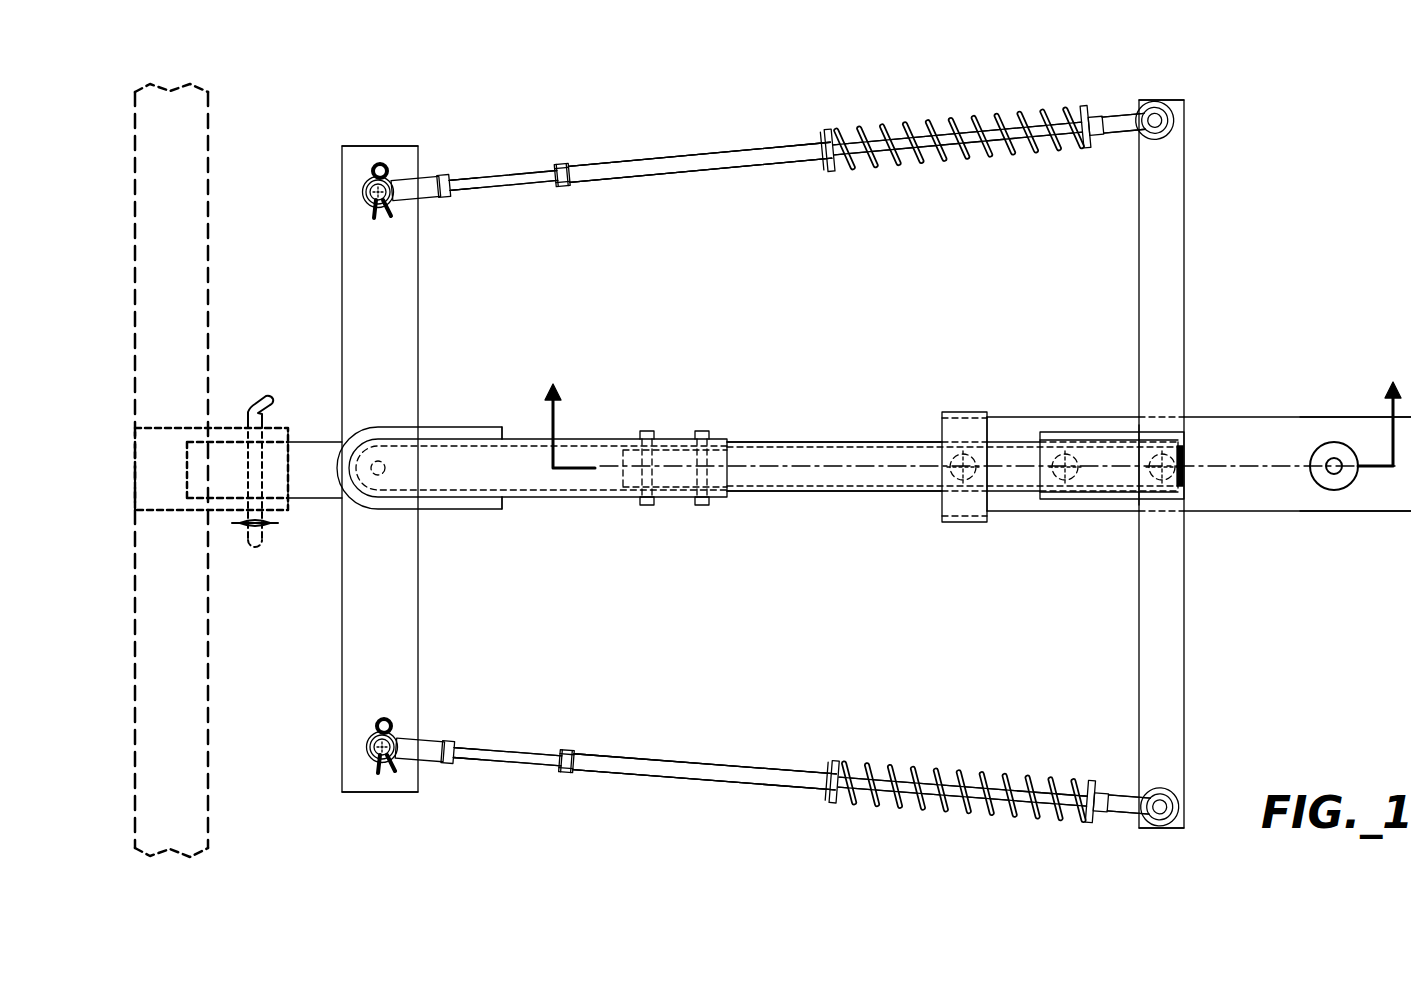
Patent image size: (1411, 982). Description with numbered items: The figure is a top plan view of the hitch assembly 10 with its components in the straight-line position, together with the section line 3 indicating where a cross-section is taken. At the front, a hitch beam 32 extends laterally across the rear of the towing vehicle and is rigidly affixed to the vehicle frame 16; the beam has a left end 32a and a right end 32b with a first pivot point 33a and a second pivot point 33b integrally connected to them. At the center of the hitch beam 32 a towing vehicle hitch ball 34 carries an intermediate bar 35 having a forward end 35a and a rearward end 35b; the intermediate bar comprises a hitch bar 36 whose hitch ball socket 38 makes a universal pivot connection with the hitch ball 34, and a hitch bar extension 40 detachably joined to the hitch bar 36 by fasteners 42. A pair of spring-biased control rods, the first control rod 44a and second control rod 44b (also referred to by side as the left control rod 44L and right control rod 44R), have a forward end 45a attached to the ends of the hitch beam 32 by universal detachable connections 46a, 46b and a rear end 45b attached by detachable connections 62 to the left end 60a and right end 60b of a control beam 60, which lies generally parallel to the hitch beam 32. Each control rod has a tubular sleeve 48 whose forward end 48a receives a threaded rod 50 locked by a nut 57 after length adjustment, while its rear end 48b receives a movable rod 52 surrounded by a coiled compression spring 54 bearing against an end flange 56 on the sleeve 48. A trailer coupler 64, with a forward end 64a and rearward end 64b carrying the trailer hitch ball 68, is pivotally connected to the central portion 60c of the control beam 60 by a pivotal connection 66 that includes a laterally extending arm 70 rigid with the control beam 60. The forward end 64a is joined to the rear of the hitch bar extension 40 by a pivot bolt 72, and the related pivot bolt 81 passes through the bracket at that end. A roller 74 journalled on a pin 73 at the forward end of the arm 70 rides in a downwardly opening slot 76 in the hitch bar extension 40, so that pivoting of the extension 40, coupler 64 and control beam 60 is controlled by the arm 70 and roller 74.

The hitch assembly 10 is at (1247, 455).
The frame 16 is at (190, 232).
The hitch beam 32 is at (372, 477).
The left end 32a is at (362, 793).
The right end 32b is at (362, 160).
The first pivot point 33a is at (372, 745).
The second pivot point 33b is at (372, 200).
The towing vehicle hitch ball 34 is at (372, 482).
The intermediate bar 35 is at (748, 503).
The forward end 35a is at (433, 503).
The rearward end 35b is at (1035, 515).
The hitch bar 36 is at (570, 440).
The hitch ball socket 38 is at (452, 428).
The hitch bar extension 40 is at (818, 440).
The fasteners 42 is at (708, 432).
The first spring-biased control rod 44a is at (755, 762).
The second spring-biased control rod 44b is at (720, 150).
The left control rod 44L is at (670, 795).
The right control rod 44R is at (672, 140).
The forward end 45a is at (451, 170).
The rear end 45b is at (1095, 153).
The universal detachable connection 46a is at (432, 768).
The universal detachable connection 46b is at (433, 178).
The tubular sleeve 48 is at (768, 172).
The forward end 48a is at (563, 162).
The rear end 48b is at (834, 135).
The rod 50 is at (528, 170).
The movable rod 52 is at (978, 125).
The coiled compression spring 54 is at (905, 130).
The end flange 56 is at (834, 172).
The nut 57 is at (562, 190).
The control beam 60 is at (1203, 461).
The left end 60a is at (1182, 830).
The right end 60b is at (1178, 103).
The central portion 60c is at (1190, 448).
The universal detachable connection 62 is at (1122, 118).
The trailer coupler 64 is at (1180, 410).
The forward end 64a is at (1030, 434).
The rearward end 64b is at (1335, 372).
The pivotal connection 66 is at (1132, 454).
The trailer hitch ball 68 is at (1087, 108).
The arm 70 is at (1075, 500).
The pivot bolt 72 is at (1165, 482).
The pin 73 is at (1052, 455).
The roller 74 is at (1068, 455).
The downwardly opening slot 76 is at (1120, 486).
The pivot bolt 81 is at (950, 475).
The section line 3- 3 is at (973, 411).